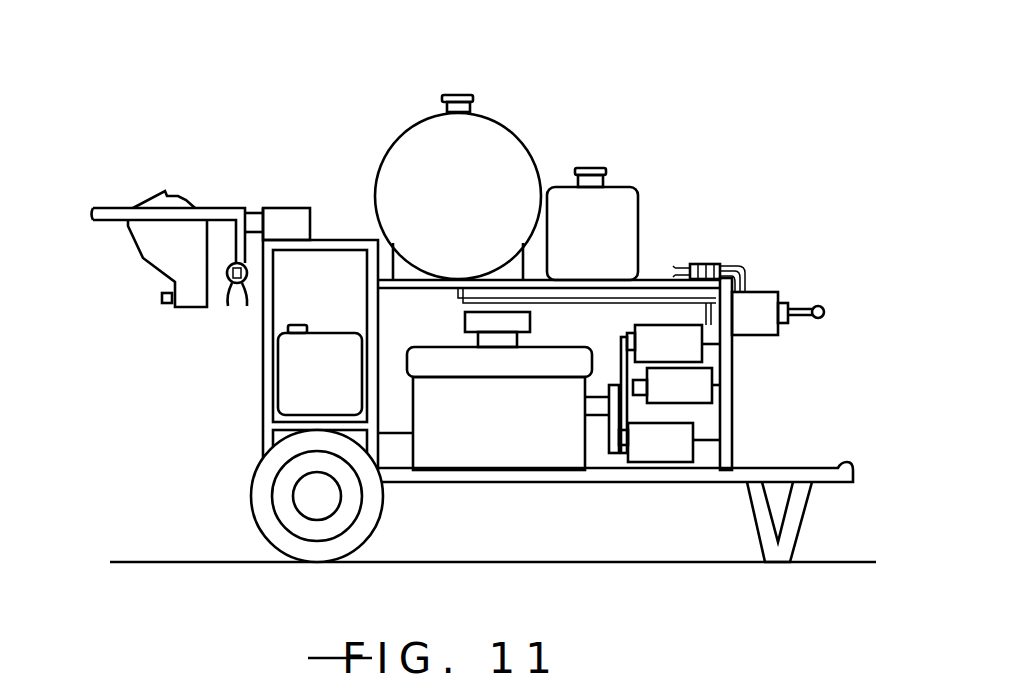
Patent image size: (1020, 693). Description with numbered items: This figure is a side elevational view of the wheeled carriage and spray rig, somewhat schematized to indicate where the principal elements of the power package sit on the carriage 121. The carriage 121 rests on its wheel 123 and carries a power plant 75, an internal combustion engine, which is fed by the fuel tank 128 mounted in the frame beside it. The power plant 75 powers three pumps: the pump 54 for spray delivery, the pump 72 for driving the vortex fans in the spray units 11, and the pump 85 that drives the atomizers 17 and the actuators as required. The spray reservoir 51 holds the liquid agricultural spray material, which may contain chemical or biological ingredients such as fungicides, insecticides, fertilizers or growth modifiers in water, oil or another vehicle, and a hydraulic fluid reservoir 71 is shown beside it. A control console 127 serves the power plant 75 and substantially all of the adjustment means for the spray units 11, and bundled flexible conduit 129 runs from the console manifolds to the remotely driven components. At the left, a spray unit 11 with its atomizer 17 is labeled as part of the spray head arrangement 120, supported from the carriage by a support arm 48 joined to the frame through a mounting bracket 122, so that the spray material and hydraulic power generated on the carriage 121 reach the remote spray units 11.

The spray unit 11 is at (125, 262).
The atomizer 17 is at (166, 310).
The support arm 48 is at (197, 210).
The spray reservoir 51 is at (522, 163).
The pump 54 is at (633, 338).
The hydraulic fluid reservoir 71 is at (633, 203).
The pump 72 is at (712, 386).
The power plant 75 is at (462, 466).
The pump 85 is at (660, 464).
The spray head assembly 120 is at (122, 192).
The carriage 121 is at (243, 378).
The mounting bracket 122 is at (257, 206).
The wheel 123 is at (263, 515).
The control console 127 is at (790, 292).
The fuel tank 128 is at (276, 402).
The bundled flexible conduit 129 is at (730, 248).